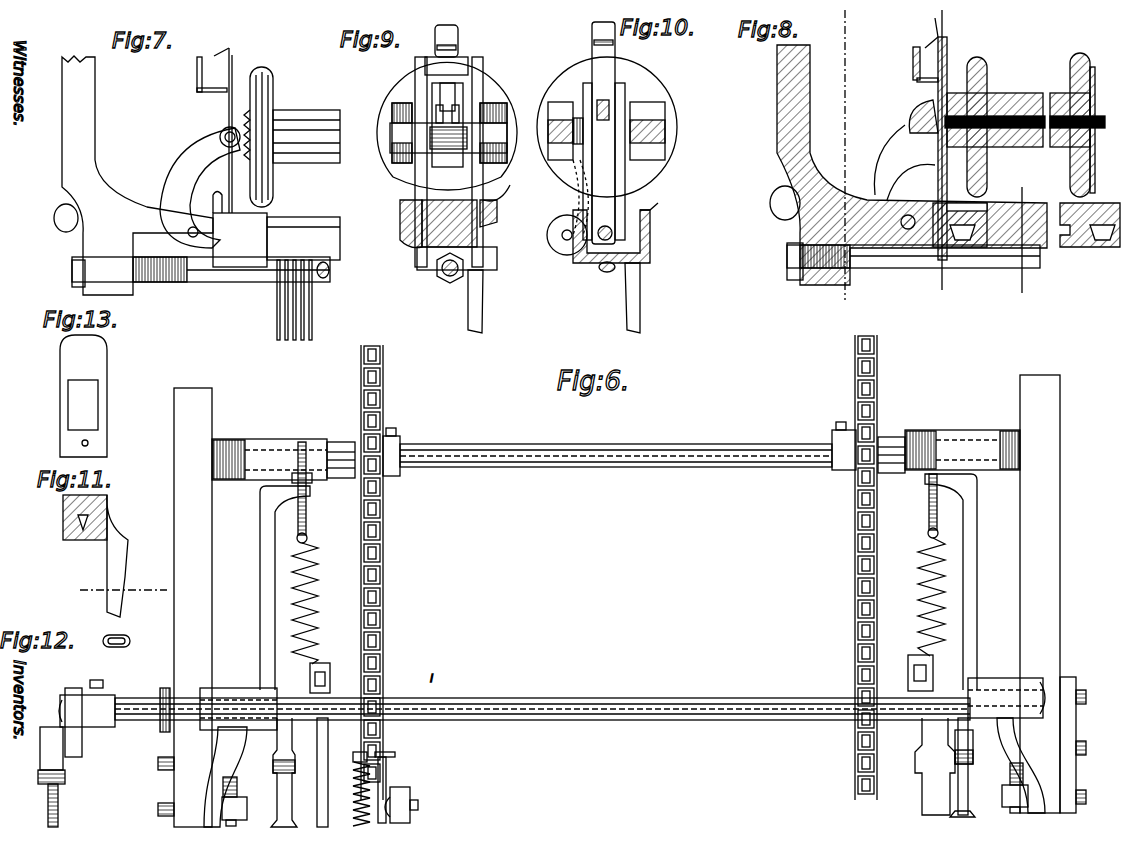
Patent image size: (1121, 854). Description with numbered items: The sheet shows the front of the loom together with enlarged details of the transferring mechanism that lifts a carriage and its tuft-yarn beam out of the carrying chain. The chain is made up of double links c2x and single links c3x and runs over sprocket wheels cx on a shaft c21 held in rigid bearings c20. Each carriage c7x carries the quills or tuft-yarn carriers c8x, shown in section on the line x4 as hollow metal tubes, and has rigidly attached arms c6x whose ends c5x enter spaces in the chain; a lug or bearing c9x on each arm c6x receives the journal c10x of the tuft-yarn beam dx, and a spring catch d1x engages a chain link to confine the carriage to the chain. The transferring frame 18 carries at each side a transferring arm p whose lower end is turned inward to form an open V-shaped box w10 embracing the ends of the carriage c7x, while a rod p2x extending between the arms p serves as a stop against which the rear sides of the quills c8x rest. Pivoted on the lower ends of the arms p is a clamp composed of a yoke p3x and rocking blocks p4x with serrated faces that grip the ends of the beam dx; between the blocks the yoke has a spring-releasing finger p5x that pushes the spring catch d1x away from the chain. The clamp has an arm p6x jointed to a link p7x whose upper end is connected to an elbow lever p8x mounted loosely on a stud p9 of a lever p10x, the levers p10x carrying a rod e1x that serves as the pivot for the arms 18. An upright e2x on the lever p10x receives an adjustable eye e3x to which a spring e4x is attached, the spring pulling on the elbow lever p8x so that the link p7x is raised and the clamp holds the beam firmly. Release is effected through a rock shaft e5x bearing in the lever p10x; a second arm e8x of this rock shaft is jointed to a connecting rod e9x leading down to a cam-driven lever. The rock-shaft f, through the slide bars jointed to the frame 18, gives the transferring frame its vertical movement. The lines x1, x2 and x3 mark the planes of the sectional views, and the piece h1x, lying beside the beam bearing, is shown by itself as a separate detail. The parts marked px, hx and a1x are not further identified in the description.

In FIG. 6, the rigid bearing c20 is at (896, 422).
In FIG. 6, the shaft c21 is at (720, 446).
In FIG. 6, the sprocket wheel cx is at (383, 528).
In FIG. 6, the double link c2x is at (383, 626).
In FIG. 6, the single link c3x is at (383, 594).
In FIG. 6, the upright or stand e2x is at (260, 626).
In FIG. 6, the adjustable eye e3x is at (306, 512).
In FIG. 6, the spring e4x is at (300, 620).
In FIG. 6, the elbow lever p8x is at (330, 664).
In FIG. 6, the rock shaft e5x is at (588, 698).
In FIG. 6, the rod e1x is at (706, 716).
In FIG. 6, the stud p9 is at (426, 698).
In FIG. 6, the lever p10x is at (210, 690).
In FIG. 6, the transferring frame 18 is at (1036, 815).
In FIG. 6, the second arm e8x is at (70, 700).
In FIG. 6, the connecting rod e9x is at (58, 812).
In FIG. 6, the link p7x is at (922, 805).
In FIG. 7, the link p7x is at (62, 182).
In FIG. 8, the link p7x is at (777, 170).
In FIG. 6, the rod px is at (318, 800).
In FIG. 6, the rock-shaft f is at (353, 792).
In FIG. 6, the bracket hx is at (375, 780).
In FIG. 6, the carriage c7x is at (222, 805).
In FIG. 7, the carriage c7x is at (340, 226).
In FIG. 9, the carriage c7x is at (340, 222).
In FIG. 8, the carriage c7x is at (1078, 250).
In FIG. 11, the carriage c7x is at (108, 498).
In FIG. 7, the transferring arm p is at (62, 112).
In FIG. 8, the transferring arm p is at (777, 110).
In FIG. 7, the arm p6x is at (64, 230).
In FIG. 9, the arm p6x is at (430, 242).
In FIG. 7, the yoke p3x is at (165, 182).
In FIG. 9, the yoke p3x is at (415, 182).
In FIG. 8, the yoke p3x is at (880, 160).
In FIG. 7, the spring releasing finger p5x is at (222, 134).
In FIG. 9, the spring releasing finger p5x is at (440, 128).
In FIG. 10, the spring releasing finger p5x is at (610, 105).
In FIG. 8, the spring releasing finger p5x is at (910, 115).
In FIG. 7, the rocking block p4x is at (240, 122).
In FIG. 9, the rocking block p4x is at (512, 84).
In FIG. 10, the rocking block p4x is at (665, 150).
In FIG. 7, the rod a1x is at (232, 36).
In FIG. 8, the rod a1x is at (947, 40).
In FIG. 7, the end of arm c5x is at (212, 74).
In FIG. 8, the end of arm c5x is at (913, 68).
In FIG. 7, the tuft yarn beam dx is at (306, 112).
In FIG. 10, the tuft yarn beam dx is at (672, 118).
In FIG. 8, the tuft yarn beam dx is at (1012, 95).
In FIG. 9, the spring catch d1x is at (458, 40).
In FIG. 10, the spring catch d1x is at (592, 38).
In FIG. 7, the open V-shaped box w10 is at (242, 267).
In FIG. 9, the open V-shaped box w10 is at (497, 222).
In FIG. 10, the open V-shaped box w10 is at (650, 226).
In FIG. 8, the open V-shaped box w10 is at (975, 250).
In FIG. 7, the quill or tuft yarn carrier c8x is at (276, 330).
In FIG. 9, the quill or tuft yarn carrier c8x is at (483, 320).
In FIG. 10, the quill or tuft yarn carrier c8x is at (640, 315).
In FIG. 11, the quill or tuft yarn carrier c8x is at (128, 548).
In FIG. 12, the quill or tuft yarn carrier c8x is at (130, 640).
In FIG. 7, the rod p2x is at (326, 280).
In FIG. 9, the rod p2x is at (442, 275).
In FIG. 10, the rod p2x is at (598, 270).
In FIG. 8, the rod p2x is at (905, 268).
In FIG. 8, the section line x1 is at (843, 156).
In FIG. 8, the section line x2 is at (945, 156).
In FIG. 8, the section line x3 is at (1025, 245).
In FIG. 11, the section line x4 is at (122, 581).
In FIG. 8, the arm c6x is at (1065, 200).
In FIG. 8, the lug or bearing c9x is at (1005, 150).
In FIG. 8, the journal c10x is at (1048, 150).
In FIG. 8, the piece h1x is at (1095, 95).
In FIG. 13, the piece h1x is at (107, 366).